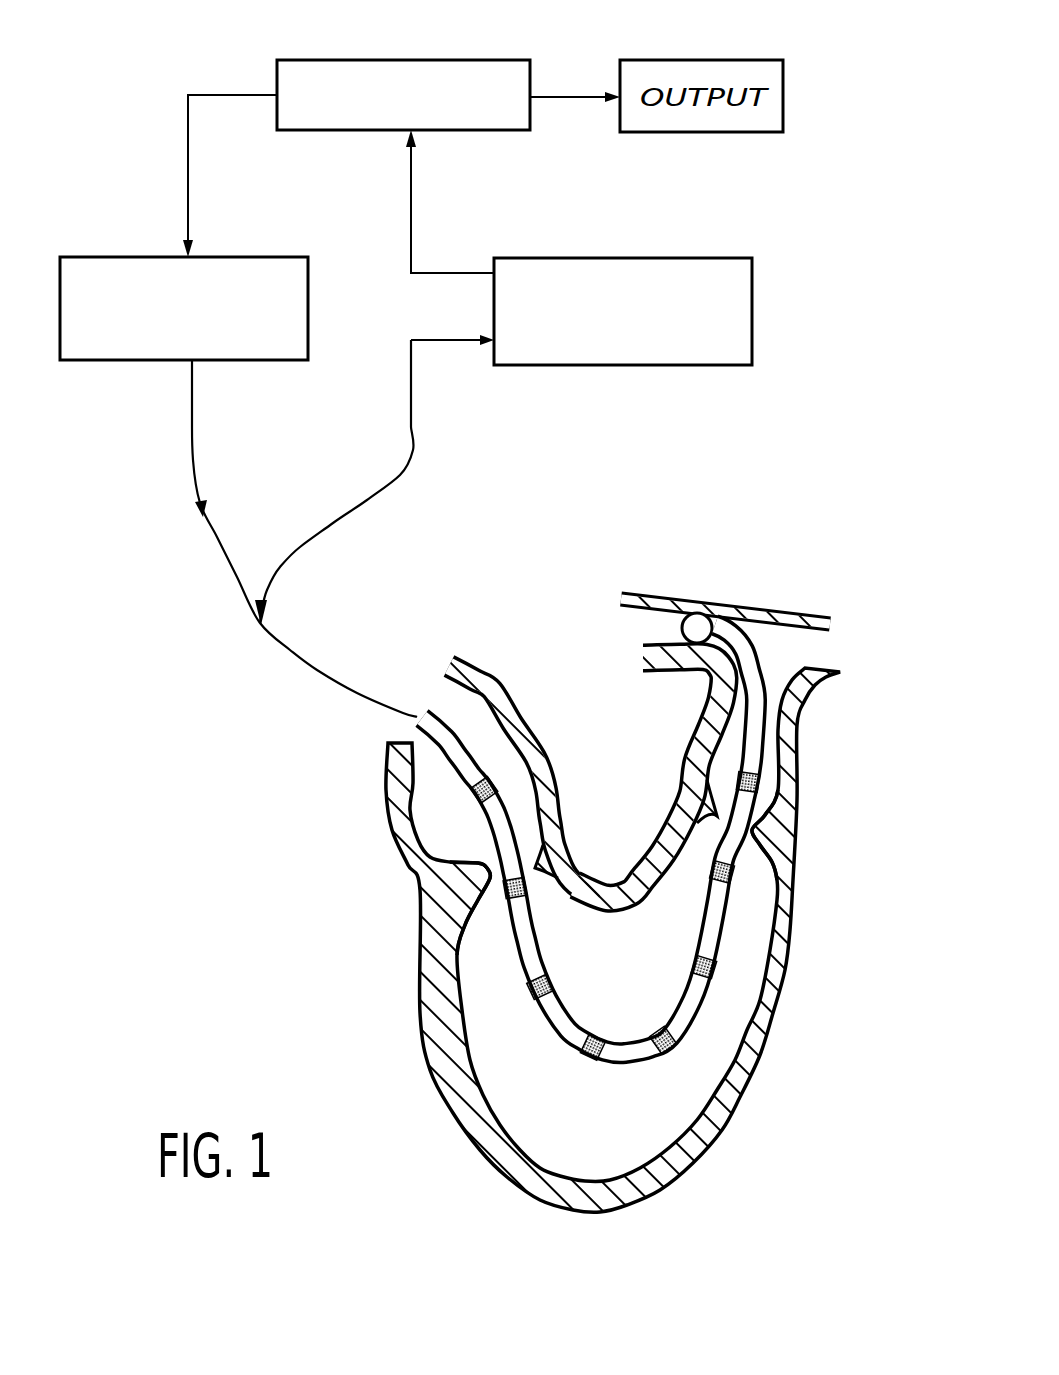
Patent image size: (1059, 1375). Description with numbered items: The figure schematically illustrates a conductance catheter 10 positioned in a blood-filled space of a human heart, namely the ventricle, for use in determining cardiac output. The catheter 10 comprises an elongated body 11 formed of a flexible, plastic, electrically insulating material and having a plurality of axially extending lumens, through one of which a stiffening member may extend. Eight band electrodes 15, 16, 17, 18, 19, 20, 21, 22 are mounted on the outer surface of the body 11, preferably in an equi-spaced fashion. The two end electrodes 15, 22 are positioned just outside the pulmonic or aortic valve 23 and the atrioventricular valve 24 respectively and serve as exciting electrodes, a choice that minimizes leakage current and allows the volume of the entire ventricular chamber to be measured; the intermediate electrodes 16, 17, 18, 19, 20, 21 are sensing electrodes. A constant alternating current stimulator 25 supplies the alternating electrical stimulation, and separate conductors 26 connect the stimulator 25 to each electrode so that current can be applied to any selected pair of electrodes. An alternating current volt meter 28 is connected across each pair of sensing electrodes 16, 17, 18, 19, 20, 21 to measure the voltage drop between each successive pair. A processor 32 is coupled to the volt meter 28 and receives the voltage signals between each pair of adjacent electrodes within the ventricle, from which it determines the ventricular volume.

The conductance catheter 10 is at (485, 949).
The elongated body 11 is at (707, 1013).
The band electrode 15 is at (760, 780).
The band electrode 16 is at (734, 883).
The band electrode 17 is at (695, 955).
The band electrode 18 is at (658, 1027).
The band electrode 19 is at (585, 1059).
The band electrode 20 is at (529, 998).
The band electrode 21 is at (525, 885).
The band electrode 22 is at (474, 790).
The pulmonic or aortic valve 23 is at (757, 837).
The atrioventricular valve 24 is at (467, 882).
The stimulator 25 is at (277, 273).
The conductors 26 is at (313, 667).
The alternating current volt meter 28 is at (752, 305).
The processor 32 is at (437, 58).